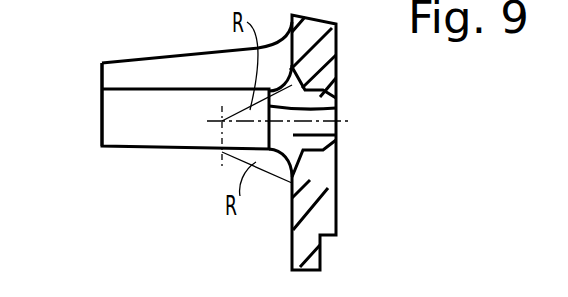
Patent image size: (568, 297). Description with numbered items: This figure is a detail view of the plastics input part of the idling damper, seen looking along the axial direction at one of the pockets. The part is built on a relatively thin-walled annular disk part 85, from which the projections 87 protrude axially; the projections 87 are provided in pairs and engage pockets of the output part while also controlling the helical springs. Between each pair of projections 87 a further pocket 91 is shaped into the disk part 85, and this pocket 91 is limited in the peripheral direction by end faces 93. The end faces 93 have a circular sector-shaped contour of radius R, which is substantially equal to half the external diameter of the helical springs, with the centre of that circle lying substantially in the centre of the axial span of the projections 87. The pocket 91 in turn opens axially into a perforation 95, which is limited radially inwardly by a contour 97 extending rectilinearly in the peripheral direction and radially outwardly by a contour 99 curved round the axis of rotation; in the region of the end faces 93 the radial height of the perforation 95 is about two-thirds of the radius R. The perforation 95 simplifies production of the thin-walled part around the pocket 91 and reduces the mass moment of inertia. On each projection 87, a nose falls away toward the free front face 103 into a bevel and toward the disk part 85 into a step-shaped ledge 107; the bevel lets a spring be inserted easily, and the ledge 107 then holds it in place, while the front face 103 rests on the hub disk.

The annular disk part 85 is at (342, 52).
The projections 87 is at (137, 128).
The pockets 91 is at (337, 173).
The end faces 93 is at (337, 136).
The perforations 95 is at (337, 128).
The contour 97 is at (337, 98).
The contour 99 is at (337, 210).
The free front face 103 is at (101, 117).
The step-shaped ledge 107 is at (337, 108).